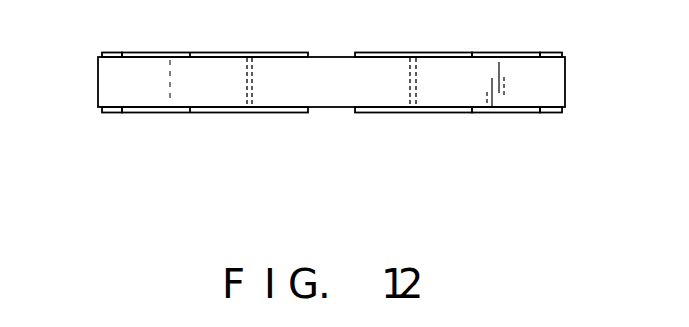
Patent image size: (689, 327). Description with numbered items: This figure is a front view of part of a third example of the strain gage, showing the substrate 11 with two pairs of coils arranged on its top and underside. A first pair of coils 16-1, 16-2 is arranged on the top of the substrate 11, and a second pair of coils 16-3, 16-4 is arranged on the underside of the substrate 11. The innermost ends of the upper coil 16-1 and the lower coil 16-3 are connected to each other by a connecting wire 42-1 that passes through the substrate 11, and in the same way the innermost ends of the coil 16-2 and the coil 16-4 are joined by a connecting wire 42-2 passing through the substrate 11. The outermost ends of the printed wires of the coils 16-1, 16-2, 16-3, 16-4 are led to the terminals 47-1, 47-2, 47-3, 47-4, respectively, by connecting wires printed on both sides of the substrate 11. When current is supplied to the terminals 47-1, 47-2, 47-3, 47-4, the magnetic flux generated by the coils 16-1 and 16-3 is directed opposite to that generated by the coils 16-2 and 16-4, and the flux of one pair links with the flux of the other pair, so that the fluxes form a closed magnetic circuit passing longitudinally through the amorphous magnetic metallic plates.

The substrate 11 is at (102, 82).
The terminal 47-1 is at (112, 53).
The coil 16-1 is at (215, 53).
The connecting wire 42-1 is at (252, 82).
The coil 16-2 is at (375, 53).
The connecting wire 42-2 is at (417, 73).
The terminal 47-2 is at (553, 53).
The terminal 47-3 is at (108, 113).
The coil 16-3 is at (222, 113).
The coil 16-4 is at (395, 113).
The terminal 47-4 is at (550, 113).